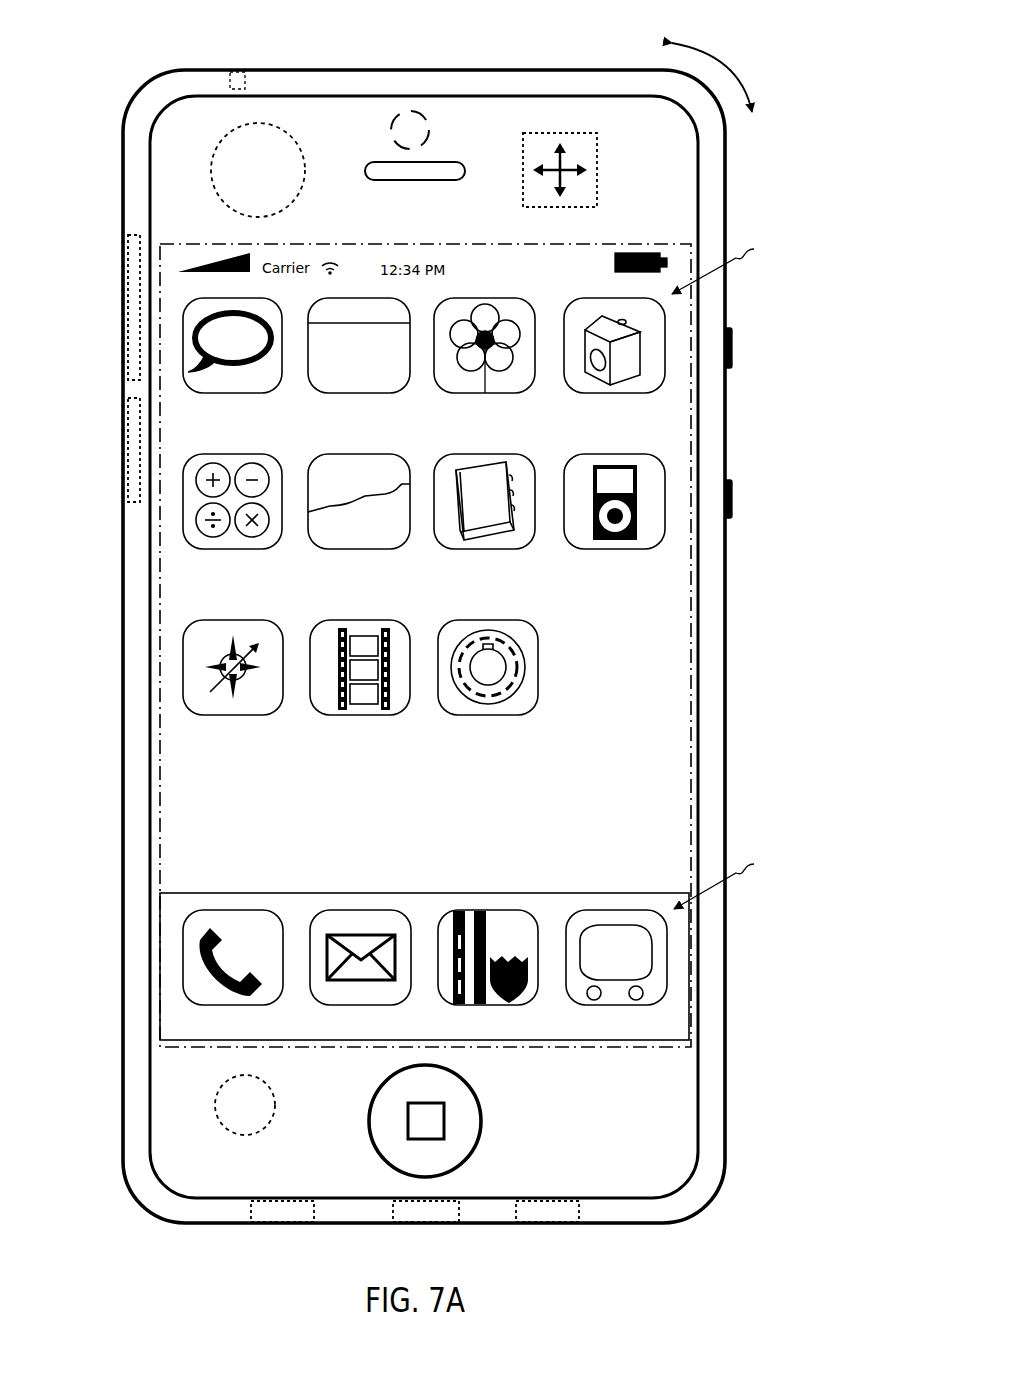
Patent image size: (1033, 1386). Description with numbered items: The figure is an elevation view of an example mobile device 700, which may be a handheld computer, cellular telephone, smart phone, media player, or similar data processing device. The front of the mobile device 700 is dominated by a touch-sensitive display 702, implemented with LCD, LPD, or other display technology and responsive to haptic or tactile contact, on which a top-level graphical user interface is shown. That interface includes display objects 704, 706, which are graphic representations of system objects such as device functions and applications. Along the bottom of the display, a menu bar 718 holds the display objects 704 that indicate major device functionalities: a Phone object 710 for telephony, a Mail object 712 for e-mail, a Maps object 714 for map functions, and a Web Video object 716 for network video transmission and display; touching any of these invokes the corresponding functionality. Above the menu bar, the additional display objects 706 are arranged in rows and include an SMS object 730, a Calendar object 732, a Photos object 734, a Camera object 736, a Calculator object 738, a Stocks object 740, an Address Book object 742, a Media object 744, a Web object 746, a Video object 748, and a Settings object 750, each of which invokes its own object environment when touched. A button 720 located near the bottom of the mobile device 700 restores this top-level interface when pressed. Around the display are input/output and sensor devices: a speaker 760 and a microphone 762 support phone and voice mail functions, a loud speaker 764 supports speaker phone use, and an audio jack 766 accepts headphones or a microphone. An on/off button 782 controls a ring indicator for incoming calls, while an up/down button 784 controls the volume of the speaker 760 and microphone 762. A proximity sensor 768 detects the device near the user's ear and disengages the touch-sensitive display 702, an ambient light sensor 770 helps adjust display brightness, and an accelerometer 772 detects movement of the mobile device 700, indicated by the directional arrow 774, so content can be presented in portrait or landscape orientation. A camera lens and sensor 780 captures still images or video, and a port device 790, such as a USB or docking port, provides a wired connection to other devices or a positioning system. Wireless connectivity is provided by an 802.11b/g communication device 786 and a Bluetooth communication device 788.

The mobile device 700 is at (512, 70).
The touch-sensitive display 702 is at (625, 244).
The display objects 704 is at (481, 944).
The display objects 706 is at (737, 263).
The Phone object 710 is at (237, 910).
The Mail object 712 is at (365, 910).
The Maps object 714 is at (506, 910).
The Web Video object 716 is at (614, 910).
The menu bar 718 is at (570, 1040).
The button 720 is at (482, 1120).
The SMS object 730 is at (278, 393).
The Calendar object 732 is at (405, 393).
The Photos object 734 is at (518, 393).
The Camera object 736 is at (662, 393).
The Calculator object 738 is at (278, 549).
The Stocks object 740 is at (405, 549).
The Address Book object 742 is at (530, 549).
The Media object 744 is at (662, 549).
The Web object 746 is at (278, 715).
The Video object 748 is at (405, 715).
The Settings object 750 is at (533, 715).
The speaker 760 is at (395, 180).
The microphone 762 is at (318, 1210).
The loud speaker 764 is at (580, 1212).
The audio jack 766 is at (245, 80).
The proximity sensor 768 is at (300, 175).
The ambient light sensor 770 is at (262, 1131).
The accelerometer 772 is at (597, 172).
The directional arrow 774 is at (735, 70).
The camera lens and sensor 780 is at (430, 128).
The on/off button 782 is at (732, 350).
The up/down button 784 is at (732, 498).
The 802.11b/g communication device 786 is at (128, 236).
The Bluetooth communication device 788 is at (128, 400).
The port device 790 is at (458, 1212).